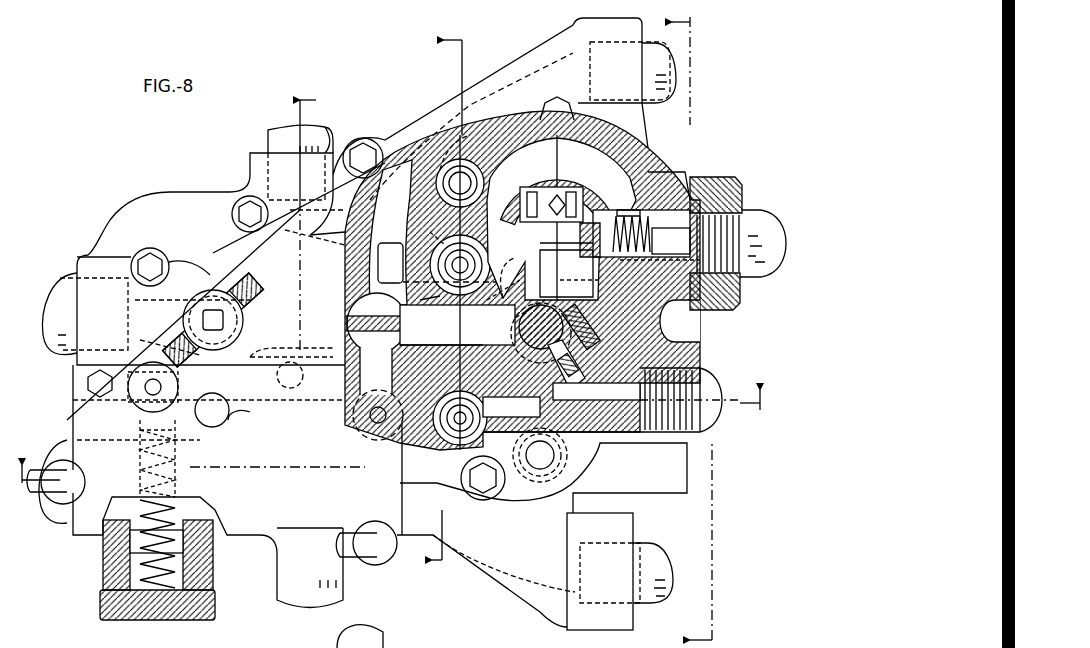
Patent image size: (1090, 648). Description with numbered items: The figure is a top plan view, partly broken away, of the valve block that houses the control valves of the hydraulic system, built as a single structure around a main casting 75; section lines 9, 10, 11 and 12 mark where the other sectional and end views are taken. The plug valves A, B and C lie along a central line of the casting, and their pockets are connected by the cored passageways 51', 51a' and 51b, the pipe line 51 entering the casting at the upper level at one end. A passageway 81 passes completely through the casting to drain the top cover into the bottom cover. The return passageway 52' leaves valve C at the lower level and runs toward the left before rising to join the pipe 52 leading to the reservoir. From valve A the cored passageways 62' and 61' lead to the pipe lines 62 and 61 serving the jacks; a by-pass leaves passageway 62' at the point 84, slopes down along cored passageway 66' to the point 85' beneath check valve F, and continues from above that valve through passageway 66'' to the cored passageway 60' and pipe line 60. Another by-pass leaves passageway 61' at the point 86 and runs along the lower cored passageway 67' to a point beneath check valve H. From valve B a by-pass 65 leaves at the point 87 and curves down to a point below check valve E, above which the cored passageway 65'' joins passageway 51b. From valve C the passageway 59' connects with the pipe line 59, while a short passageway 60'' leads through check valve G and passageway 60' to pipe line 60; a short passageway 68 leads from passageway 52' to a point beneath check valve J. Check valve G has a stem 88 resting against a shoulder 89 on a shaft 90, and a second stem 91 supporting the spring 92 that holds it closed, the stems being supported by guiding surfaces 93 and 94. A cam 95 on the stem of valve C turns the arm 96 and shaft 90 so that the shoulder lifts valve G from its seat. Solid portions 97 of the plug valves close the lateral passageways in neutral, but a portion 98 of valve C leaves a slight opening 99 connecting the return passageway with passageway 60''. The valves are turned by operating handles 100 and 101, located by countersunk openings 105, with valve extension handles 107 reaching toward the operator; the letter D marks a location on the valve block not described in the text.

The section line 9- 9 is at (392, 425).
The section line 10- 10 is at (681, 331).
The section line 11- 11 is at (436, 301).
The section line 12- 12 is at (258, 386).
The pipe line 51 is at (193, 292).
The cored passageway 51' is at (143, 255).
The cored passageway 51a' is at (238, 317).
The cored passageway 51b is at (441, 364).
The pipe 52 is at (522, 280).
The return passageway 52' is at (360, 523).
The pipe line 59 is at (646, 388).
The passageway 59' is at (558, 473).
The pipe line 60 is at (746, 232).
The cored passageway 60' is at (669, 183).
The short passageway 60'' is at (515, 278).
The pipe line 61 is at (221, 558).
The cored passageway 61' is at (205, 458).
The pipe line 62 is at (294, 146).
The cored passageway 62' is at (285, 209).
The by-pass 65 is at (425, 295).
The cored passageway 65'' is at (457, 325).
The cored passageway 66' is at (392, 232).
The passageway 66'' is at (561, 219).
The cored passageway 67' is at (424, 429).
The short passageway 68 is at (561, 415).
The main casting 75 is at (545, 45).
The passageway 81 is at (303, 380).
The point 84 is at (317, 210).
The point 85' is at (469, 135).
The point 86 is at (245, 412).
The point 87 is at (390, 263).
The stem 88 is at (580, 276).
The shoulder 89 is at (478, 258).
The shaft 90 is at (553, 198).
The stem 91 is at (635, 233).
The spring 92 is at (660, 284).
The guiding surface 93 is at (600, 205).
The guiding surface 94 is at (700, 180).
The cam 95 is at (512, 304).
The arm 96 is at (578, 292).
The solid portion 97 is at (530, 358).
The portion of valve C 98 is at (512, 312).
The opening 99 is at (584, 342).
The operating handle 100 is at (72, 420).
The operating handle 101 is at (395, 528).
The countersunk opening 105 is at (213, 410).
The valve extension handle 107 is at (63, 460).
The plug valve A is at (246, 305).
The plug valve B is at (405, 330).
The plug valve C is at (520, 322).
The port D is at (140, 340).
The check valve E is at (465, 245).
The check valve F is at (483, 181).
The check valve G is at (628, 213).
The check valve H is at (440, 400).
The check valve J is at (575, 462).